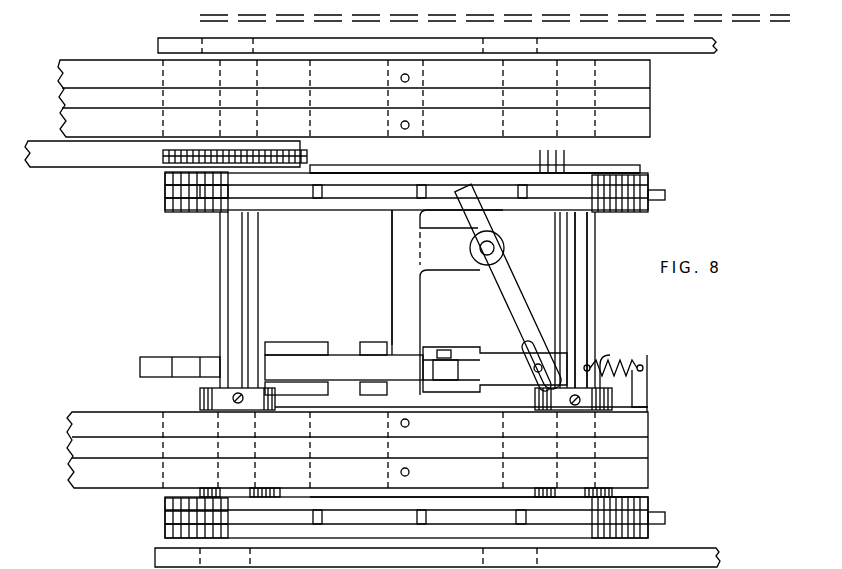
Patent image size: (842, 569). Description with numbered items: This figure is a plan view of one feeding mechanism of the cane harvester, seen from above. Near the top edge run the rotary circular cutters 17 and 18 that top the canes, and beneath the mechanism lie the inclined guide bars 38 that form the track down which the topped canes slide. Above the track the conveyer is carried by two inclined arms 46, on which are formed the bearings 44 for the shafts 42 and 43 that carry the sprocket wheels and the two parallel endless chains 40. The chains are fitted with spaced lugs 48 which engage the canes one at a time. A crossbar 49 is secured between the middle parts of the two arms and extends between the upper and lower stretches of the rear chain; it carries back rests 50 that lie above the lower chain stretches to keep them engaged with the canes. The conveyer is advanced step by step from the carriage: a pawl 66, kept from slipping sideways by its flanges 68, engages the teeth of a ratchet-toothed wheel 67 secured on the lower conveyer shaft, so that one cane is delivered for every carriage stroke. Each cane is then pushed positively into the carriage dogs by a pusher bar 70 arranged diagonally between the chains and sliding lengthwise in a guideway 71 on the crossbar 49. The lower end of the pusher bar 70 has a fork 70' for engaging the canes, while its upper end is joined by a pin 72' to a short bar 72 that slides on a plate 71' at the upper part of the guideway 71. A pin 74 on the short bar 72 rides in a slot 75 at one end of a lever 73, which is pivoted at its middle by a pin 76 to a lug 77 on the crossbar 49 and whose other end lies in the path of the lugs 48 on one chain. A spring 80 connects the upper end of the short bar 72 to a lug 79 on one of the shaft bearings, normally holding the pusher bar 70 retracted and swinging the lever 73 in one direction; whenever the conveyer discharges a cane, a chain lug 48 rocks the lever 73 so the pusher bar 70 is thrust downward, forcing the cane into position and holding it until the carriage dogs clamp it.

The rotary circular cutter 17 is at (650, 45).
The rotary circular cutter 18 is at (742, 18).
The inclined guide bar 38 is at (650, 47).
The endless chain 40 is at (165, 190).
The shaft 42 is at (588, 318).
The shaft 43 is at (243, 295).
The bearing 44 is at (623, 122).
The arm 46 is at (100, 122).
The lug 48 is at (665, 195).
The crossbar 49 is at (408, 290).
The back rest 50 is at (377, 160).
The pawl 66 is at (270, 176).
The ratchet-toothed wheel 67 is at (300, 155).
The flange 68 is at (158, 218).
The pusher bar 70 is at (344, 351).
The fork 70' is at (159, 351).
The guideway 71 is at (461, 357).
The plate 71' is at (643, 300).
The short bar 72 is at (495, 348).
The pin 72' is at (439, 338).
The lever 73 is at (507, 290).
The pin 74 is at (650, 395).
The slot 75 is at (535, 342).
The pin 76 is at (490, 248).
The lug 77 is at (462, 250).
The lug 79 is at (660, 372).
The spring 80 is at (625, 355).